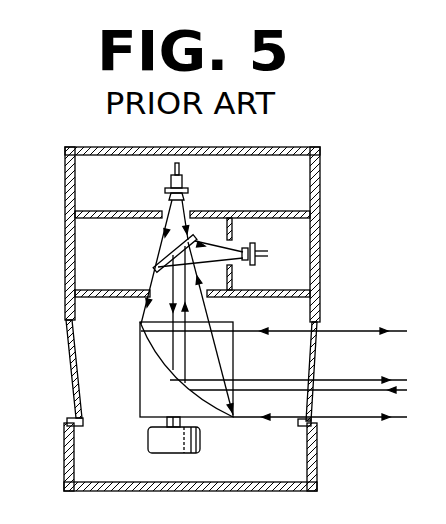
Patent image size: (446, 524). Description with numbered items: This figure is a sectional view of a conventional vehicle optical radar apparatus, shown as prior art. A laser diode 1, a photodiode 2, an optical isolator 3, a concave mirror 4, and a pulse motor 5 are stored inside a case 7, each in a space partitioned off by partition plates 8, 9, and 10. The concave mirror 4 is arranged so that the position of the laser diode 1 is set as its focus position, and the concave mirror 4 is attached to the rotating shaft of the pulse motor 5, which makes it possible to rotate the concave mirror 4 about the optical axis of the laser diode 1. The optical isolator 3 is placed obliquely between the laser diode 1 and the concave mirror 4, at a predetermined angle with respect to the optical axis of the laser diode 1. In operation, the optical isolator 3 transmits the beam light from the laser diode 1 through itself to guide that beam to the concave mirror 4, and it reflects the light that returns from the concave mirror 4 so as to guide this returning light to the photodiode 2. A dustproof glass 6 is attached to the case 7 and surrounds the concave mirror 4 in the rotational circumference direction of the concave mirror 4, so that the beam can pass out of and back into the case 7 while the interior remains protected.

The laser diode 1 is at (168, 183).
The photodiode 2 is at (260, 246).
The optical isolator 3 is at (153, 267).
The concave mirror 4 is at (140, 372).
The pulse motor 5 is at (148, 438).
The dustproof glass 6 is at (64, 345).
The case 7 is at (320, 176).
The partition plate 8 is at (189, 200).
The partition plate 9 is at (233, 238).
The partition plate 10 is at (207, 294).